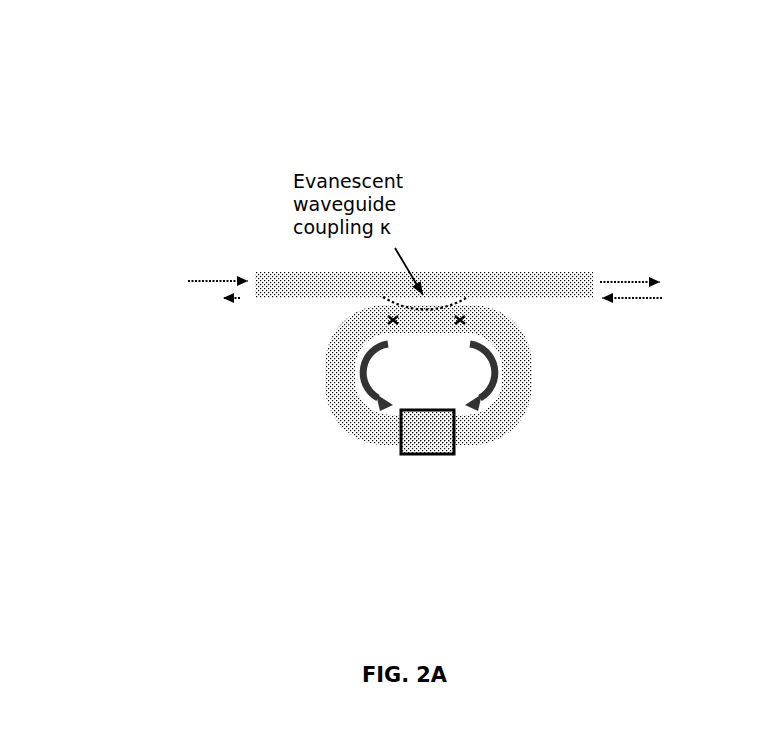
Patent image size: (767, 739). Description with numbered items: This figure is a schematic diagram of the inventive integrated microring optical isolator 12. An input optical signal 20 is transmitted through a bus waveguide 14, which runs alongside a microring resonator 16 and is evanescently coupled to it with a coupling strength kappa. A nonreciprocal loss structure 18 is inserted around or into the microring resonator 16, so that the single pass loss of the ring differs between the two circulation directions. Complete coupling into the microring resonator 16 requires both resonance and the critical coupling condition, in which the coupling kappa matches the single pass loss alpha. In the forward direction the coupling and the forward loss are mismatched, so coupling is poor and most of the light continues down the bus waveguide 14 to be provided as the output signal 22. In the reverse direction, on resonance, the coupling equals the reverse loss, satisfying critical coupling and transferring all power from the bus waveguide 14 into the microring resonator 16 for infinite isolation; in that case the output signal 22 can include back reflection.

The integrated microring optical isolator 12 is at (160, 118).
The bus waveguide 14 is at (550, 270).
The microring resonator 16 is at (525, 370).
The nonreciprocal loss structure 18 is at (393, 453).
The input optical signal 20 is at (212, 281).
The output signal 22 is at (650, 272).